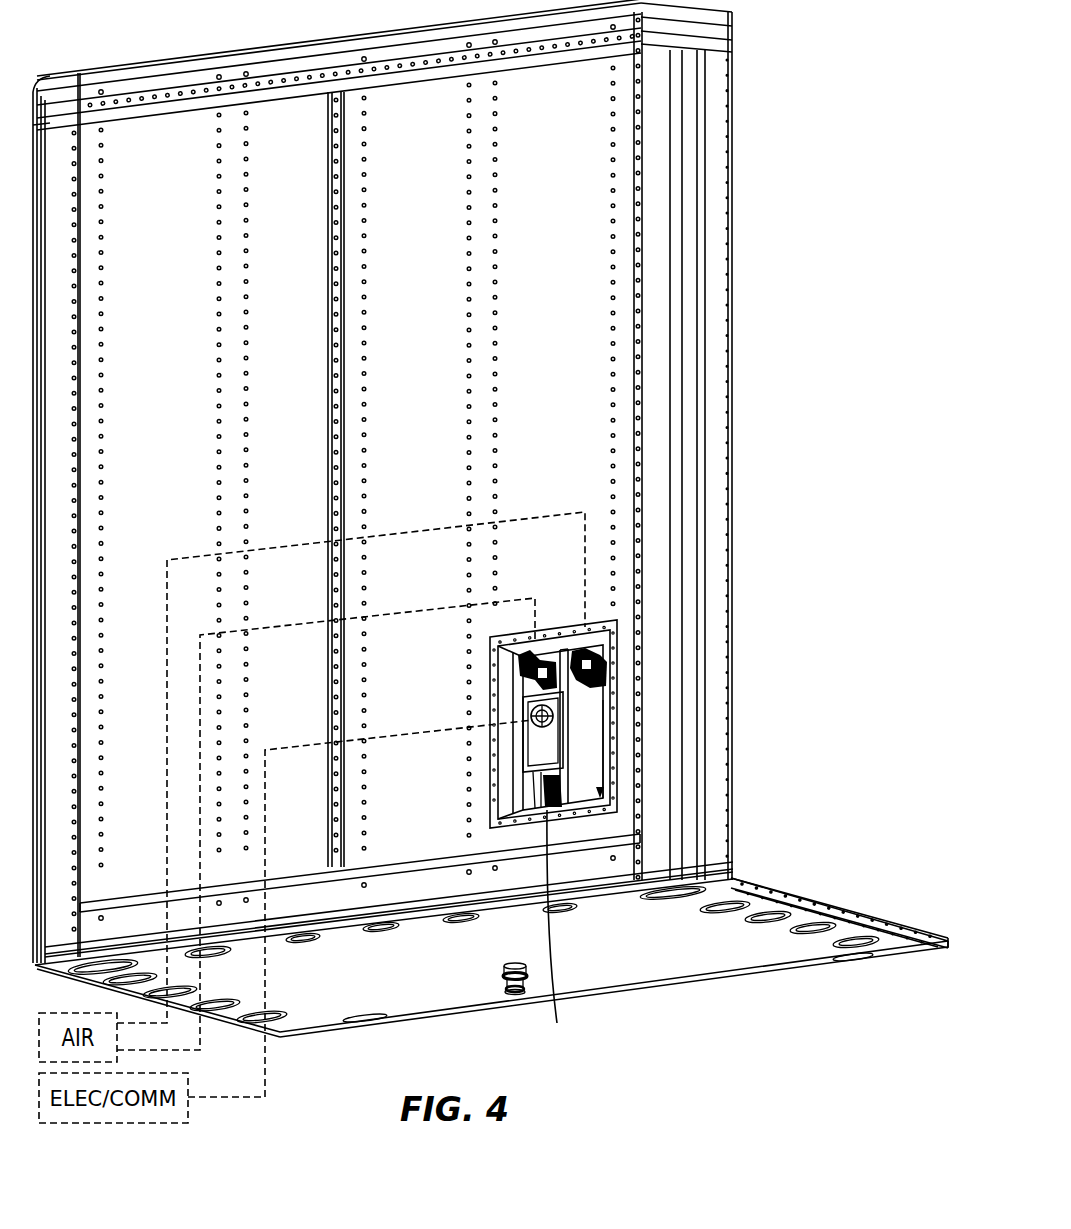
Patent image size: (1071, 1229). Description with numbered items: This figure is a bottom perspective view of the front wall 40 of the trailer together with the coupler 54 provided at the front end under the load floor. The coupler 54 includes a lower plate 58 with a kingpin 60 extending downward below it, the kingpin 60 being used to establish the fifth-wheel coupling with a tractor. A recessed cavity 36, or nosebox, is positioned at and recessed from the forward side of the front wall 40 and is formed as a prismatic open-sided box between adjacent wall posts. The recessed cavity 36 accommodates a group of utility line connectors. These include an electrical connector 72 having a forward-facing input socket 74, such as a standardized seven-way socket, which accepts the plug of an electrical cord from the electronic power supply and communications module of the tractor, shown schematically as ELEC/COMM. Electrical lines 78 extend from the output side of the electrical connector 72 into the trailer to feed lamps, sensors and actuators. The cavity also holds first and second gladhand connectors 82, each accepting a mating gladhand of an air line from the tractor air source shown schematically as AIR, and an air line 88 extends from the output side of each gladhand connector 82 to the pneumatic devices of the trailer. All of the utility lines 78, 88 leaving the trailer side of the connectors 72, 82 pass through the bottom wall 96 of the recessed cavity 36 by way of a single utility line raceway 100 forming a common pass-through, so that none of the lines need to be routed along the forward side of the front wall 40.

The recessed cavity 36 is at (591, 703).
The front wall 40 is at (555, 372).
The coupler 54 is at (843, 878).
The lower plate 58 is at (731, 952).
The kingpin 60 is at (503, 983).
The electrical connector 72 is at (563, 703).
The input socket 74 is at (540, 721).
The electrical lines 78 is at (555, 810).
The gladhand connectors 82 is at (514, 684).
The air line 88 is at (577, 787).
The bottom wall 96 is at (613, 765).
The utility line raceway 100 is at (566, 810).